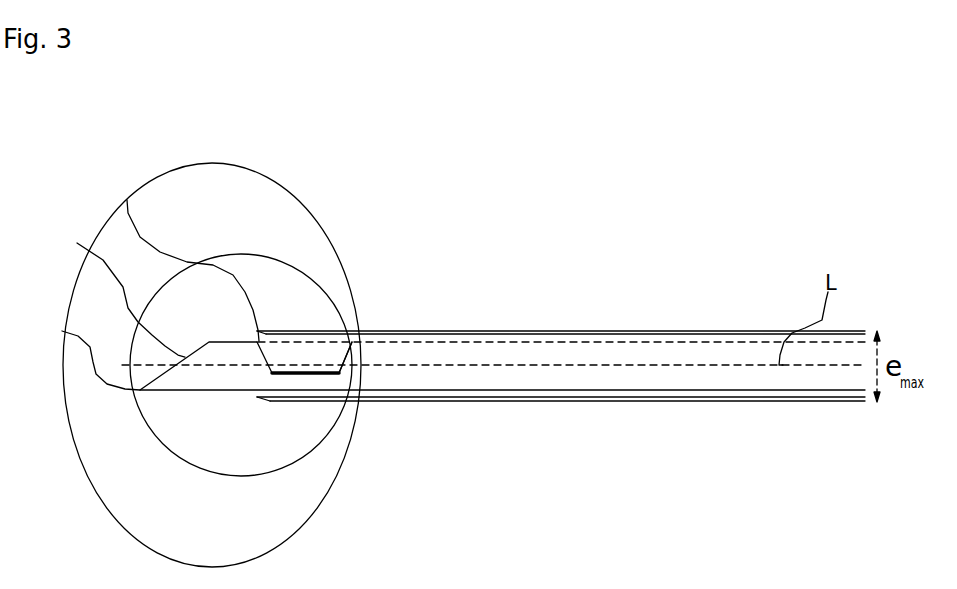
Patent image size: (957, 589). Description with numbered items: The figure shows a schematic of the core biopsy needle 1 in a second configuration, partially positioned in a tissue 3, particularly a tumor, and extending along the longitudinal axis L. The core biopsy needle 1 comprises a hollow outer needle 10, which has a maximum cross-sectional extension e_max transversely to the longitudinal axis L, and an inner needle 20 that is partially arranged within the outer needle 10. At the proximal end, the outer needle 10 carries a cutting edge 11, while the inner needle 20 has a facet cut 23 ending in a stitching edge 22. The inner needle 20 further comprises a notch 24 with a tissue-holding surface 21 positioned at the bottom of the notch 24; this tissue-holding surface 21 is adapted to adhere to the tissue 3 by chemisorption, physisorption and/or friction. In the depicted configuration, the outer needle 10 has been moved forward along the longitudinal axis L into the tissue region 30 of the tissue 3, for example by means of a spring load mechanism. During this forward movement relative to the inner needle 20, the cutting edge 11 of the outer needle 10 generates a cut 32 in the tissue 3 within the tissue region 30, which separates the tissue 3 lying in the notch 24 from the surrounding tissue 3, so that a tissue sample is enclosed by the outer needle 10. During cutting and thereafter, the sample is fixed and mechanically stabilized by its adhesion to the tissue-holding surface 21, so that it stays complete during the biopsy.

The core biopsy needle 1 is at (494, 174).
The tissue 3 is at (212, 329).
The outer needle 10 is at (493, 328).
The cutting edge 11 is at (187, 251).
The inner needle 20 is at (329, 317).
The tissue-holding surface 21 is at (311, 290).
The stitching edge 22 is at (441, 354).
The facet cut 23 is at (108, 293).
The notch 24 is at (558, 233).
The tissue region 30 is at (241, 319).
The cut 32 is at (362, 295).